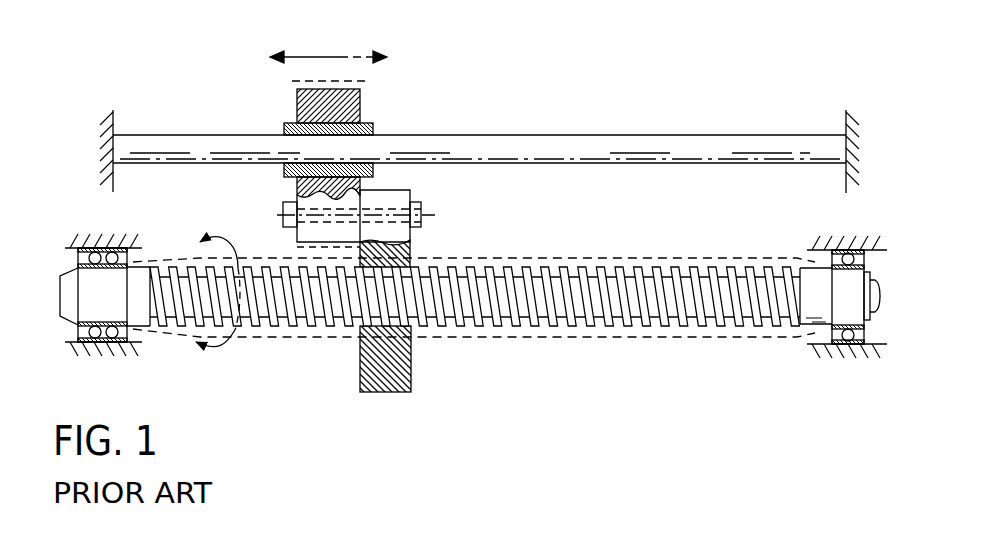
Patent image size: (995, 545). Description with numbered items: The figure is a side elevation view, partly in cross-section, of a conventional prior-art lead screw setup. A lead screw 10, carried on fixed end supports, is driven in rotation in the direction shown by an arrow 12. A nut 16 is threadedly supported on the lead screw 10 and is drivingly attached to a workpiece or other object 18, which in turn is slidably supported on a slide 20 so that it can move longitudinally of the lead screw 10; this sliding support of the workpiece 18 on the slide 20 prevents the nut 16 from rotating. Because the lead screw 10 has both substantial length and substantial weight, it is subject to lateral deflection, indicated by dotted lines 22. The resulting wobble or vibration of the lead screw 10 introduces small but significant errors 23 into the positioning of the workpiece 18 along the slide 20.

The lead screw 10 is at (632, 308).
The arrow 12 is at (222, 353).
The nut 16 is at (403, 375).
The workpiece 18 is at (355, 108).
The slide 20 is at (540, 143).
The dotted lines 22 is at (588, 258).
The errors 23 is at (342, 81).